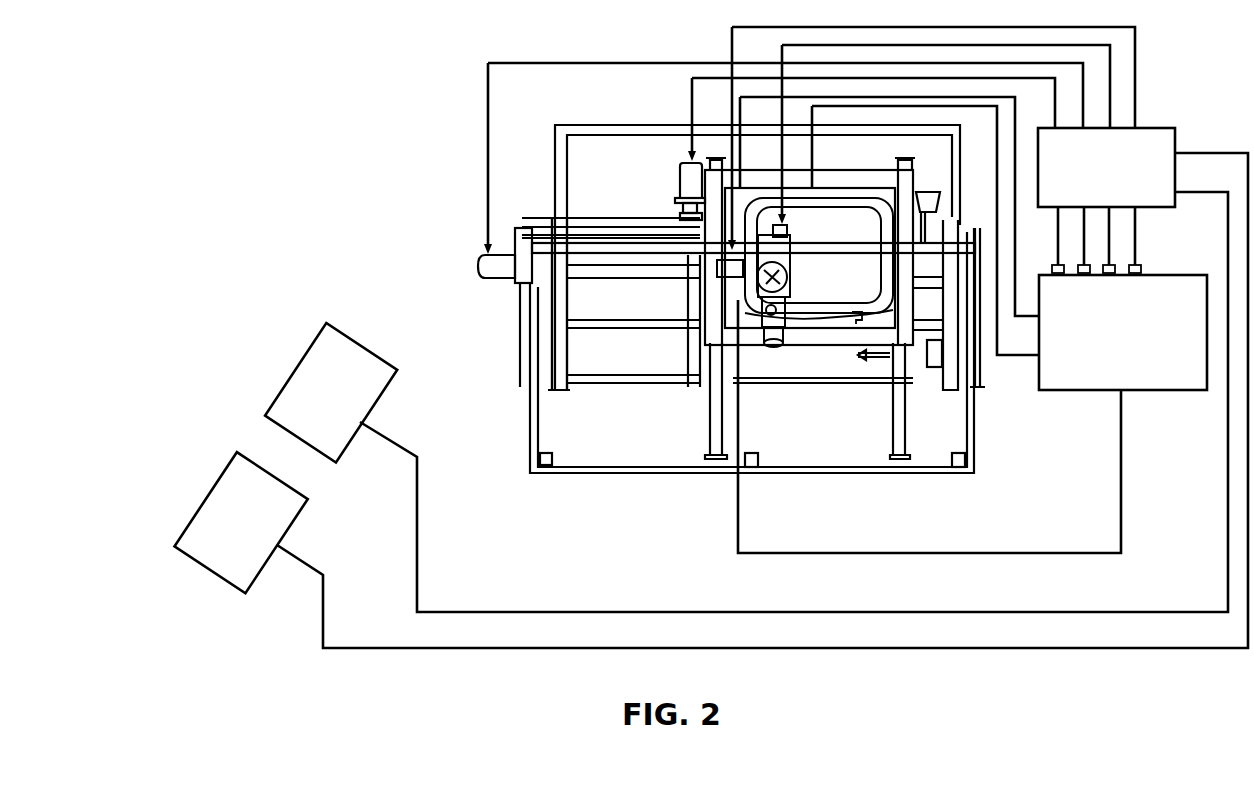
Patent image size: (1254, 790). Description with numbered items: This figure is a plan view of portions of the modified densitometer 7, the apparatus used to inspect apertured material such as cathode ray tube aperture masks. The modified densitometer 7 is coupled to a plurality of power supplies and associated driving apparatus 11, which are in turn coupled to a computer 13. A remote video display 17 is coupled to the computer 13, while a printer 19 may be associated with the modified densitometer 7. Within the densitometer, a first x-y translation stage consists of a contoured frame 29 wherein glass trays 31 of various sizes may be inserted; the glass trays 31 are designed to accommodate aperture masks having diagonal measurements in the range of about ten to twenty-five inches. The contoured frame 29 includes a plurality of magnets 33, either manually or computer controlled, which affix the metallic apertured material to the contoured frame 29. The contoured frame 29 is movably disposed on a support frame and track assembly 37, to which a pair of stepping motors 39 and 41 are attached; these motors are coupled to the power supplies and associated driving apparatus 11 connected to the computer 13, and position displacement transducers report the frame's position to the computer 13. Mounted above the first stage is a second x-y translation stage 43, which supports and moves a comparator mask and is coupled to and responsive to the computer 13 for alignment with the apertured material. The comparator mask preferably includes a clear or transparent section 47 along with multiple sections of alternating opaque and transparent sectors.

The modified densitometer 7 is at (640, 50).
The power supplies and associated driving apparatus 11 is at (1160, 134).
The computer 13 is at (1178, 382).
The remote video display 17 is at (283, 397).
The printer 19 is at (218, 473).
The contoured frame 29 is at (837, 318).
The glass trays 31 is at (840, 285).
The magnets 33 is at (856, 318).
The support frame and track assembly 37 is at (560, 385).
The stepping motor 39 is at (478, 262).
The stepping motor 41 is at (687, 182).
The second x-y translation stage 43 is at (795, 260).
The clear or transparent section 47 is at (787, 355).